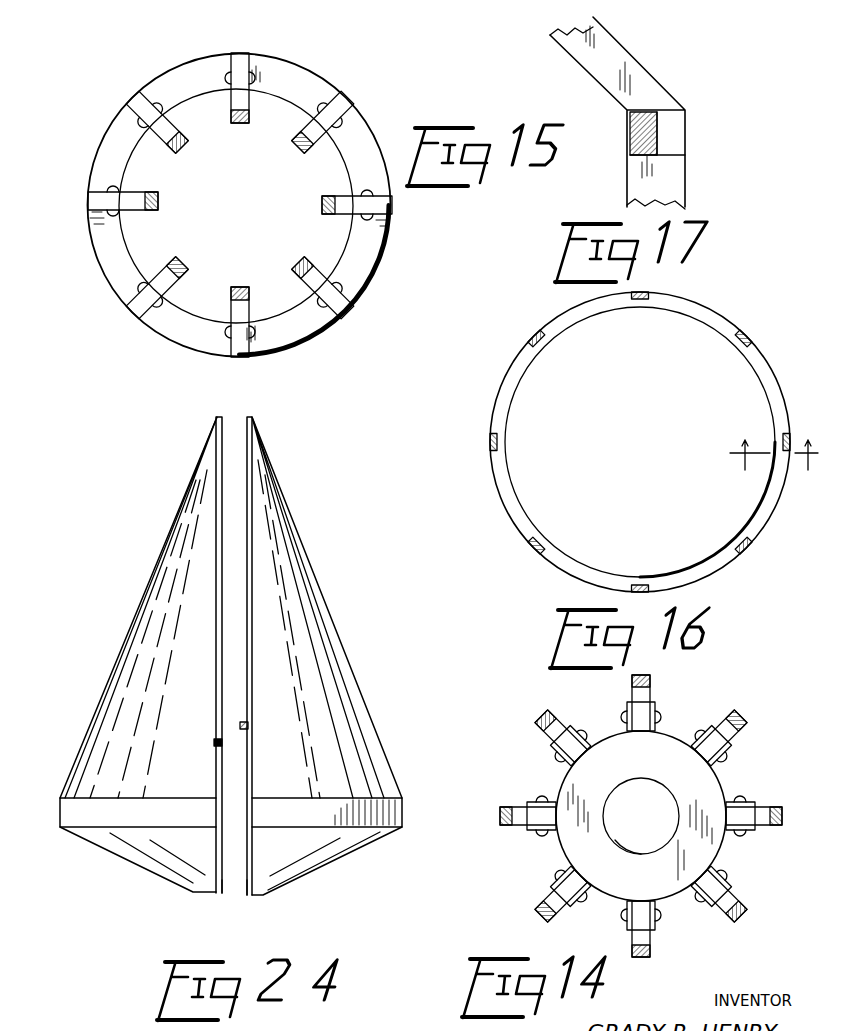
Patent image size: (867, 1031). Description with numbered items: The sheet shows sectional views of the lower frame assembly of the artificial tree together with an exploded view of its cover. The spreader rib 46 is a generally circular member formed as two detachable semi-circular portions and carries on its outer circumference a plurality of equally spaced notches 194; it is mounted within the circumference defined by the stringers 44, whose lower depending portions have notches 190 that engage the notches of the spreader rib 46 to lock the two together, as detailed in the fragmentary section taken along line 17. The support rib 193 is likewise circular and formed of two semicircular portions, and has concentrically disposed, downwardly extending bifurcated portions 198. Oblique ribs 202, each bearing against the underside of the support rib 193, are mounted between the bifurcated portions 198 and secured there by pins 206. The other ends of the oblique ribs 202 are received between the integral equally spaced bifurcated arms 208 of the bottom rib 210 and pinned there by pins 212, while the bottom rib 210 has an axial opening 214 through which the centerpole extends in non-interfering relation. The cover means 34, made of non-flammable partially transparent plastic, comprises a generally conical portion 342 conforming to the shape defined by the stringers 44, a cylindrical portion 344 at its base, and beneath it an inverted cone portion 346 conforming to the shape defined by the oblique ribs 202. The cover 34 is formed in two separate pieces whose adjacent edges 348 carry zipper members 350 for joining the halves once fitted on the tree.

In FIG. 15, the support rib 193 is at (182, 67).
In FIG. 15, the bifurcated portions 198 is at (123, 187).
In FIG. 15, the oblique ribs 202 is at (160, 261).
In FIG. 14, the oblique ribs 202 is at (576, 906).
In FIG. 15, the pins 206 is at (157, 103).
In FIG. 17, the stringers 44 is at (641, 45).
In FIG. 17, the notches 190 is at (658, 108).
In FIG. 16, the notches 190 is at (547, 554).
In FIG. 17, the notches 194 is at (674, 146).
In FIG. 16, the notches 194 is at (490, 444).
In FIG. 16, the spreader rib 46 is at (680, 307).
In FIG. 16, the section line 17 is at (771, 473).
In FIG. 14, the bifurcated arms 208 is at (522, 805).
In FIG. 14, the bottom rib 210 is at (657, 780).
In FIG. 14, the pins 212 is at (582, 733).
In FIG. 14, the axial opening 214 is at (618, 852).
In FIG. 24, the cover means 34 is at (228, 669).
In FIG. 24, the conical portion 342 is at (146, 598).
In FIG. 24, the cylindrical portion 344 is at (62, 808).
In FIG. 24, the inverted cone portion 346 is at (155, 870).
In FIG. 24, the adjacent edges 348 is at (222, 880).
In FIG. 24, the zipper members 350 is at (214, 742).